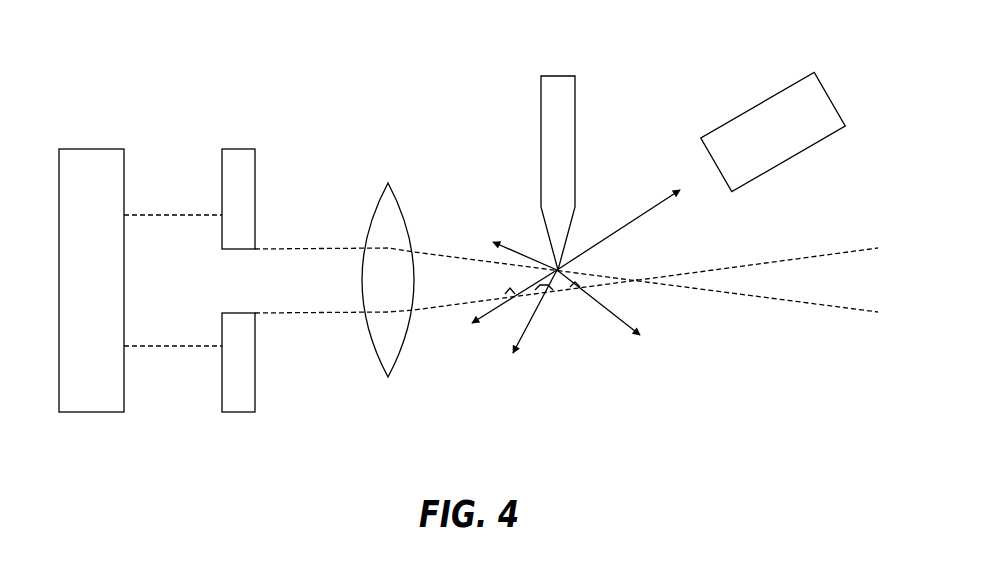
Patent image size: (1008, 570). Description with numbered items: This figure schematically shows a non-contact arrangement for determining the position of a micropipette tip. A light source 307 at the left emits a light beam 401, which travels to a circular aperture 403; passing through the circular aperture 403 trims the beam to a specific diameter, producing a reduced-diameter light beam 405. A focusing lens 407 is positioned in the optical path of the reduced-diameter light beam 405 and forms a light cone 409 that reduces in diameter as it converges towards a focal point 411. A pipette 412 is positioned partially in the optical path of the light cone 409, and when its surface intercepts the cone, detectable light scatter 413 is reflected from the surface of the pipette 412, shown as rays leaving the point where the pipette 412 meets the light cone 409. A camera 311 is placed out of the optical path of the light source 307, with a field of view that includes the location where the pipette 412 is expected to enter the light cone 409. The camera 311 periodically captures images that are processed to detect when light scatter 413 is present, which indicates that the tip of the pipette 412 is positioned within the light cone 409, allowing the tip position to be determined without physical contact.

The light source 307 is at (108, 148).
The circular aperture 403 is at (240, 148).
The light beam 401 is at (176, 347).
The reduced-diameter light beam 405 is at (316, 313).
The focusing lens 407 is at (400, 208).
The light cone 409 is at (463, 305).
The pipette 412 is at (573, 113).
The light scatter 413 is at (641, 222).
The focal point 411 is at (637, 281).
The camera 311 is at (754, 104).